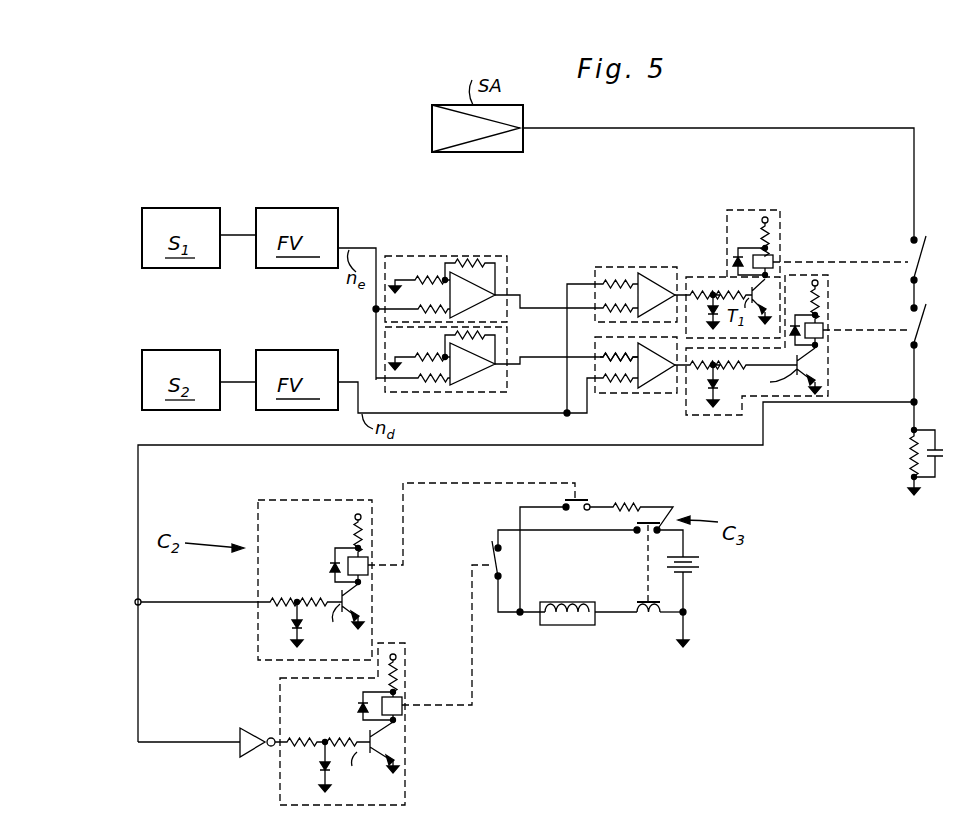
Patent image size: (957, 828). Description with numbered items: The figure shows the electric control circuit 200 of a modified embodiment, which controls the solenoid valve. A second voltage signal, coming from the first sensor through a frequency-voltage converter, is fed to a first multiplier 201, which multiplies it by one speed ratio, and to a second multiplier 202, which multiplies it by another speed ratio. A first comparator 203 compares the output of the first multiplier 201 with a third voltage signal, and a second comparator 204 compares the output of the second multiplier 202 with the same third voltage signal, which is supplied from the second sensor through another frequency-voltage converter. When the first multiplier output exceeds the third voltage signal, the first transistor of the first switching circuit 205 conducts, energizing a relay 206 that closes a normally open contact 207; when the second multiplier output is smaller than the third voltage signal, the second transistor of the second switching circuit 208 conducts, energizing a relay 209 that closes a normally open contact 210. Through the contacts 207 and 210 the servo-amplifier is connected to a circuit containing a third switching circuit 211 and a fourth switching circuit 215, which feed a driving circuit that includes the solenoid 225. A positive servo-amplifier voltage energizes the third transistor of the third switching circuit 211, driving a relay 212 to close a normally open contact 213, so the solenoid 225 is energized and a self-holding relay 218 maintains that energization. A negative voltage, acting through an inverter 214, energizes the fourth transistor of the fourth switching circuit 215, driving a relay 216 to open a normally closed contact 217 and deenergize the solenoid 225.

The electric control circuit 200 is at (404, 210).
The first multiplier 201 is at (407, 257).
The second multiplier 202 is at (498, 389).
The first comparator 203 is at (613, 268).
The second comparator 204 is at (620, 393).
The first switching circuit 205 is at (737, 210).
The relay 206 is at (773, 260).
The normally open contact 207 is at (910, 252).
The second switching circuit 208 is at (820, 368).
The relay 209 is at (825, 325).
The normally open contact 210 is at (910, 319).
The third switching circuit 211 is at (288, 500).
The relay 212 is at (369, 573).
The normally open contact 213 is at (583, 500).
The inverter 214 is at (248, 727).
The fourth switching circuit 215 is at (405, 796).
The relay 216 is at (405, 700).
The normally closed contact 217 is at (491, 560).
The self-holding relay 218 is at (645, 556).
The solenoid 225 is at (548, 602).